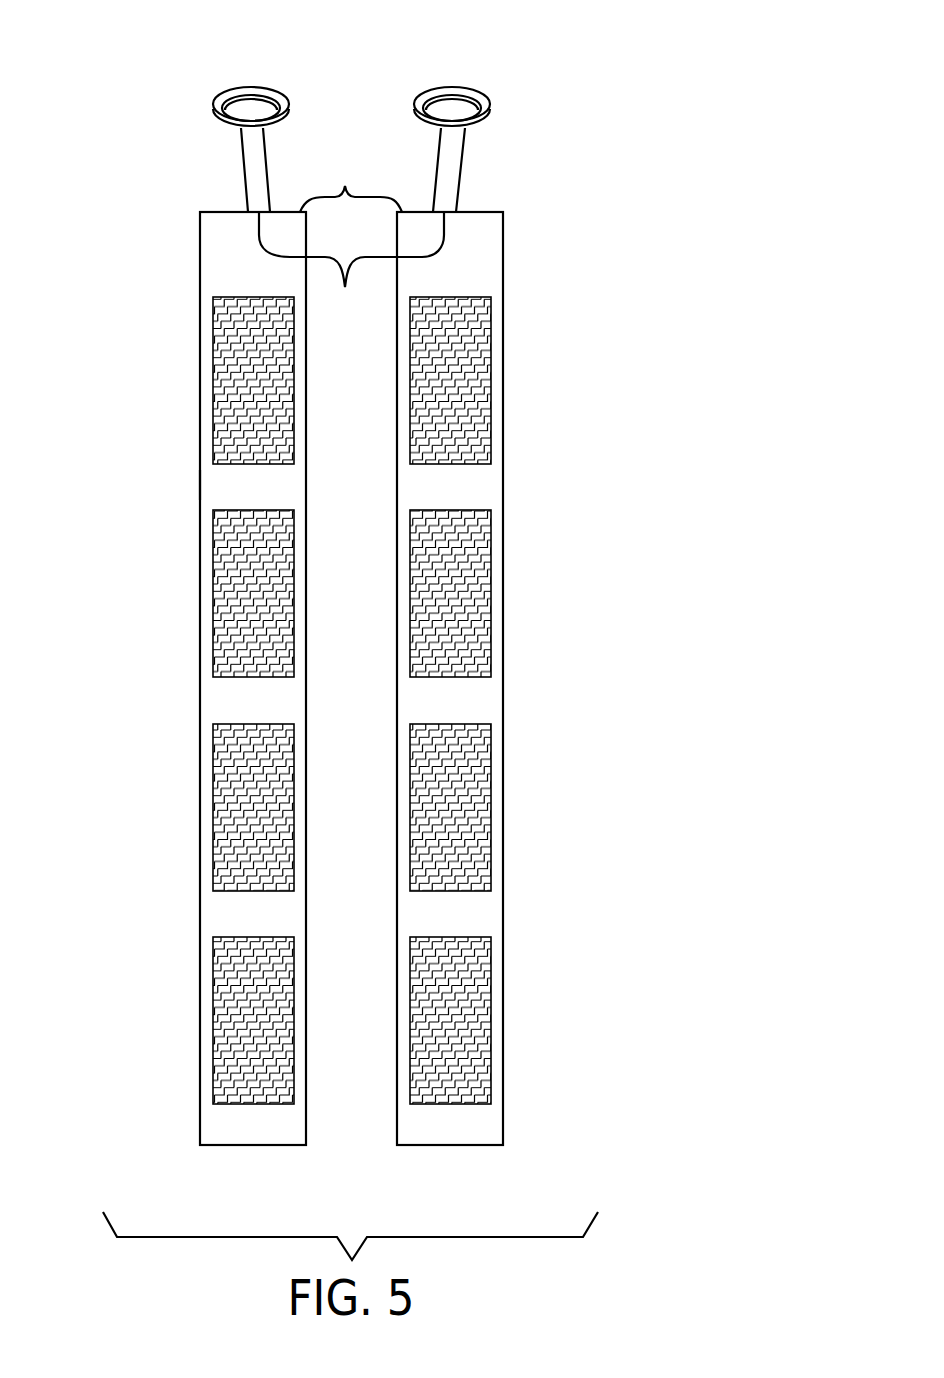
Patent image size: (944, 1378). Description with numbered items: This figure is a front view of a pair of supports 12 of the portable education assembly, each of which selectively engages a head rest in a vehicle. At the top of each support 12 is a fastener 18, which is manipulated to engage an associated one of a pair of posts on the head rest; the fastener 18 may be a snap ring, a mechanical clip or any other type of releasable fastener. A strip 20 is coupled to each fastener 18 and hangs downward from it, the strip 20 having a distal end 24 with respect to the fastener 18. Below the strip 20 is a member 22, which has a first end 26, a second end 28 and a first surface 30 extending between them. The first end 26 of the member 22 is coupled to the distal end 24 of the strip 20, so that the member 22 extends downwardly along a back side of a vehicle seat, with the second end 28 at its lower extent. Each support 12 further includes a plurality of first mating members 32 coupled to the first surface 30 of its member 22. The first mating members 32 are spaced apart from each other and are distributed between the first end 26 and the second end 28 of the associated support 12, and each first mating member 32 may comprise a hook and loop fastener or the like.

The support 12 is at (410, 85).
The fastener 18 is at (221, 101).
The strip 20 is at (242, 160).
The member 22 is at (200, 216).
The distal end 24 is at (351, 272).
The first end 26 is at (351, 179).
The second end 28 is at (205, 1145).
The first surface 30 is at (228, 505).
The first mating member 32 is at (237, 358).